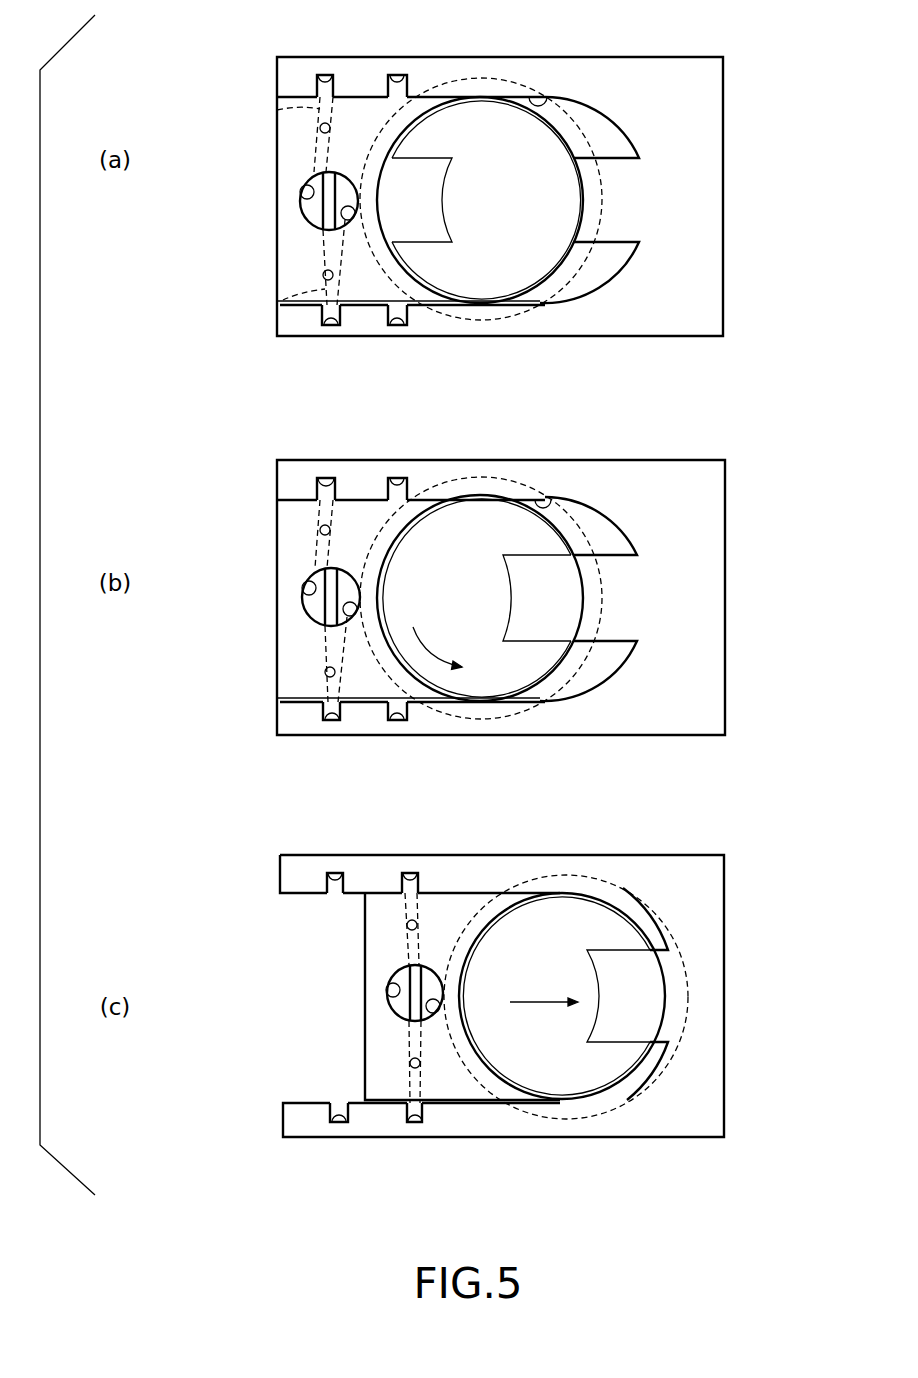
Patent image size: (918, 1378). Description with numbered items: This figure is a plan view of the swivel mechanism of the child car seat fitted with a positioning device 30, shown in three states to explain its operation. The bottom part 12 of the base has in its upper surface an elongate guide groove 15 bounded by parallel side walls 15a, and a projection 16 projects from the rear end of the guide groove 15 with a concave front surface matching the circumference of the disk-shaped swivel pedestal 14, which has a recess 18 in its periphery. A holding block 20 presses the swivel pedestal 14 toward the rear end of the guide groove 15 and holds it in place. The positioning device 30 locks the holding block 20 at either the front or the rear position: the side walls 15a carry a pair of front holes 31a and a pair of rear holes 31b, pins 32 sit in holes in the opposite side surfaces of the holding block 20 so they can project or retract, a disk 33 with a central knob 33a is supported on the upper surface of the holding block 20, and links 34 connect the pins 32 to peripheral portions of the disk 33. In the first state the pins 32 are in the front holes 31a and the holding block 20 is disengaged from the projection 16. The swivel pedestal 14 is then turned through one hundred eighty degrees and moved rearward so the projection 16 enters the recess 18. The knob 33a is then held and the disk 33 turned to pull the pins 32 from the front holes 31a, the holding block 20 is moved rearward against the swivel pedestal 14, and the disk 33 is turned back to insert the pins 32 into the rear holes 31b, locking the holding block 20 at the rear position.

The bottom part 12 is at (548, 73).
The swivel pedestal 14 is at (515, 255).
The guide groove 15 is at (600, 130).
The side walls 15a is at (572, 96).
The projection 16 is at (593, 192).
The recess 18 is at (417, 162).
The holding block 20 is at (290, 123).
The positioning device 30 is at (297, 232).
The front holes 31a is at (337, 87).
The rear holes 31b is at (410, 87).
The pins 32 is at (277, 108).
The disk 33 is at (300, 203).
The knob 33a is at (303, 252).
The links 34 is at (316, 140).